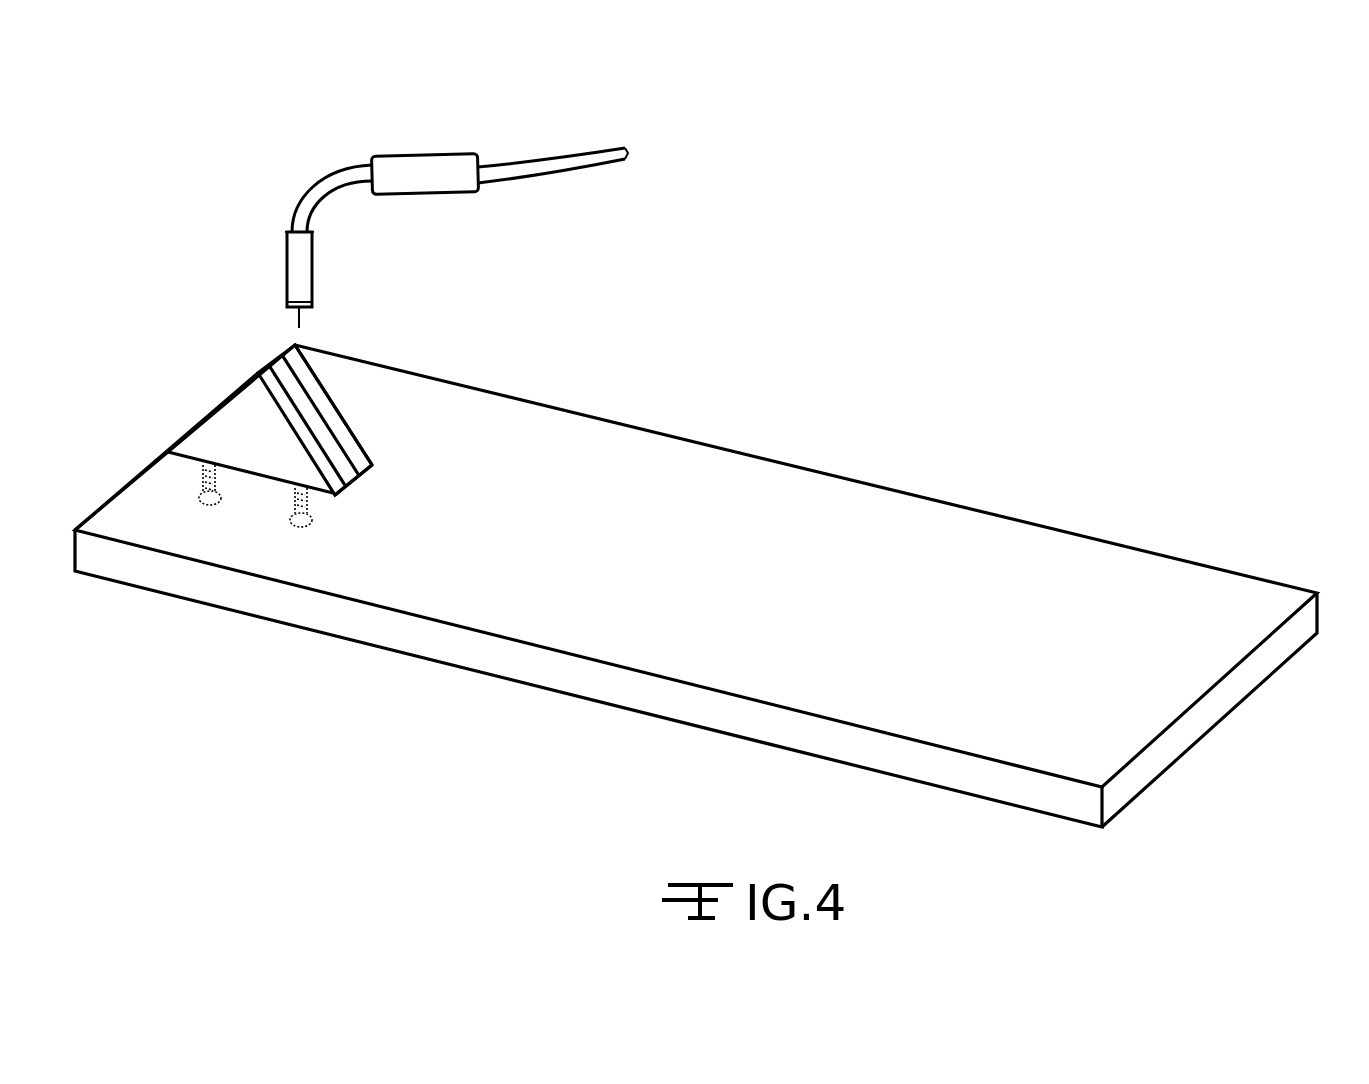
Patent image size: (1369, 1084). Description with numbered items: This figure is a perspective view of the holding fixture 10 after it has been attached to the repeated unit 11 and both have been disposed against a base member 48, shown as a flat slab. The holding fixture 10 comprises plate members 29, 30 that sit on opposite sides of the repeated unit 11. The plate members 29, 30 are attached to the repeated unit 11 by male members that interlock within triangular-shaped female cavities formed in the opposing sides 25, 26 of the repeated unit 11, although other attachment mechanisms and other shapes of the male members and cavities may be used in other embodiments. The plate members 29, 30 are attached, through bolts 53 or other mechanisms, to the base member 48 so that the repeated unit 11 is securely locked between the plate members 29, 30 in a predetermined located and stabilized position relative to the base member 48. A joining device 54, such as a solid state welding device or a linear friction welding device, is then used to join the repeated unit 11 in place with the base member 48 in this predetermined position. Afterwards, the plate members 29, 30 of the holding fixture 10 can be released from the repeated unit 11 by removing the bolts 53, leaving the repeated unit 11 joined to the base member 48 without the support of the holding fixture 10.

The holding fixture 10 is at (276, 402).
The repeated unit 11 is at (274, 367).
The opposing side 25 is at (325, 458).
The opposing side 26 is at (346, 444).
The plate member 29 is at (188, 434).
The plate member 30 is at (330, 396).
The base member 48 is at (686, 442).
The bolts 53 is at (290, 516).
The joining device 54 is at (287, 234).